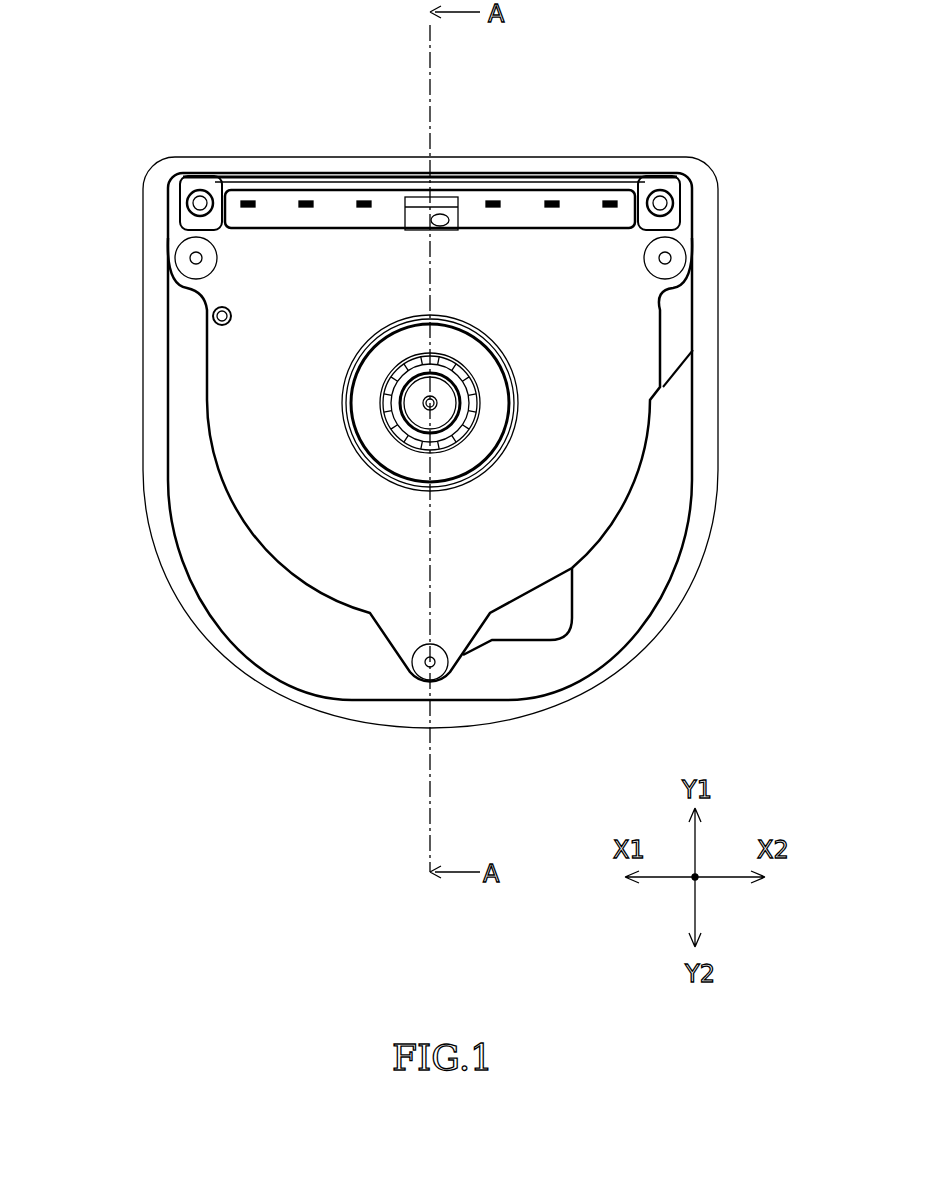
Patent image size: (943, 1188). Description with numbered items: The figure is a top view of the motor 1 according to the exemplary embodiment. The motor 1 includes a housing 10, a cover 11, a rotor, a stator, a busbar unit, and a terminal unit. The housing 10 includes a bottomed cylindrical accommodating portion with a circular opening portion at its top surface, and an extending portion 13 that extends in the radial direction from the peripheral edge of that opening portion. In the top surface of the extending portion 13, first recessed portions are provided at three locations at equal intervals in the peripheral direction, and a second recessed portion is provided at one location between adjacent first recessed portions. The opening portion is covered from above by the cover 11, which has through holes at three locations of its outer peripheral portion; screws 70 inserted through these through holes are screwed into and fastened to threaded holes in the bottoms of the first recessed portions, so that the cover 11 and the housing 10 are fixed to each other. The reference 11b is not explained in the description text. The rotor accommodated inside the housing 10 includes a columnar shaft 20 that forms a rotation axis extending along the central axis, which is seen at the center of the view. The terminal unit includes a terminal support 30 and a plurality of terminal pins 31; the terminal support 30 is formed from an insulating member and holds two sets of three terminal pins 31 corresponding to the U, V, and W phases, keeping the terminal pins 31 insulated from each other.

The motor 1 is at (705, 74).
The housing 10 is at (152, 472).
The cover 11 is at (345, 558).
The bearing holder 11b is at (503, 358).
The extending portion 13 is at (210, 566).
The shaft 20 is at (435, 405).
The terminal support 30 is at (388, 190).
The terminal pins 31 is at (364, 203).
The screws 70 is at (194, 256).